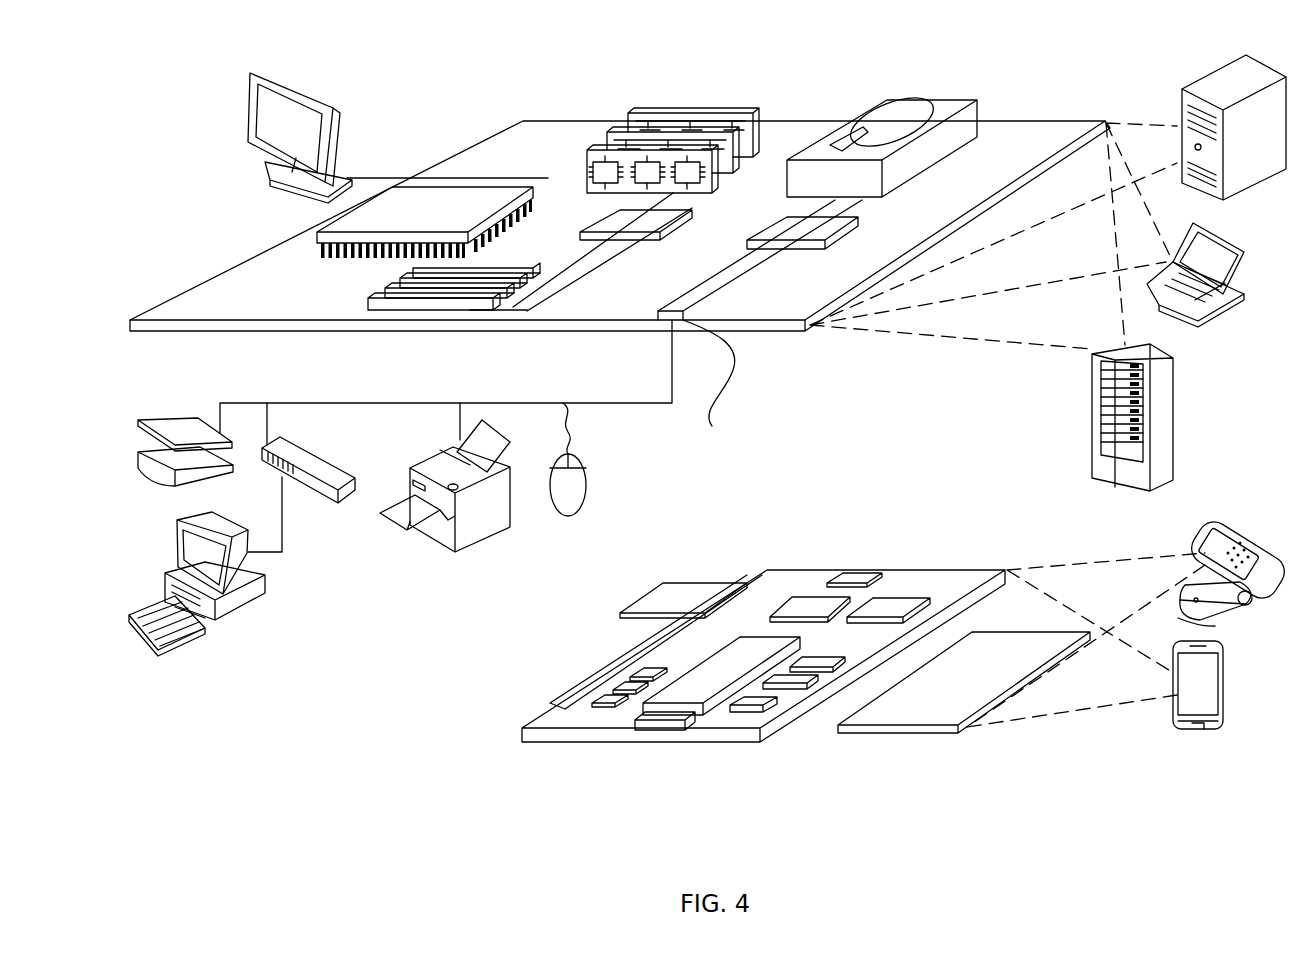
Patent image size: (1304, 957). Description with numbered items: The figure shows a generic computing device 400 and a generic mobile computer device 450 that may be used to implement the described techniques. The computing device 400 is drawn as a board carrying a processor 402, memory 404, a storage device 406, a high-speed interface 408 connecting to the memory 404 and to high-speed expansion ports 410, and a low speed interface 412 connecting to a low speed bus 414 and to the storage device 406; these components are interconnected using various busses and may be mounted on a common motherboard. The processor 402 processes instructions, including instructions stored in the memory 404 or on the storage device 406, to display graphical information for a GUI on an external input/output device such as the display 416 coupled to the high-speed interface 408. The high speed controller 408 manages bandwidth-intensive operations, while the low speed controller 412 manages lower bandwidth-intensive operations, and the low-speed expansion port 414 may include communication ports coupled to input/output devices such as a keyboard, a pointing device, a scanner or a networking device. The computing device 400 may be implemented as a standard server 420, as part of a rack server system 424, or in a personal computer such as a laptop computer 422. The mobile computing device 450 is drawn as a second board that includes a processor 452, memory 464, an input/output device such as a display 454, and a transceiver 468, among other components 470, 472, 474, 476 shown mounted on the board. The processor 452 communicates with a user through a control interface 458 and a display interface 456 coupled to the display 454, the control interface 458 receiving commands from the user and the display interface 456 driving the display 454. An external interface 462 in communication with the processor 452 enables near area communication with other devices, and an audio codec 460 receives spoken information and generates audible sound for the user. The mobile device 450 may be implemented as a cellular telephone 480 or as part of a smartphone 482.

The computing device 400 is at (438, 98).
The processor 402 is at (318, 238).
The memory 404 is at (652, 115).
The storage device 406 is at (880, 100).
The high-speed interface 408 is at (600, 222).
The high-speed expansion ports 410 is at (385, 296).
The low speed interface 412 is at (785, 225).
The low speed bus 414 is at (712, 426).
The display 416 is at (253, 72).
The standard server 420 is at (1182, 108).
The laptop computer 422 is at (1246, 259).
The rack server system 424 is at (1092, 434).
The mobile computer device 450 is at (498, 736).
The processor 452 is at (694, 693).
The display 454 is at (925, 713).
The display interface 456 is at (763, 708).
The control interface 458 is at (795, 686).
The audio codec 460 is at (826, 665).
The external interface 462 is at (665, 723).
The memory 464 is at (603, 690).
The transceiver 468 is at (890, 605).
The antenna chip 470 is at (860, 582).
The battery strip 472 is at (728, 582).
The storage module 474 is at (662, 582).
The controller chip 476 is at (814, 608).
The cellular telephone 480 is at (1226, 538).
The smartphone 482 is at (1175, 699).